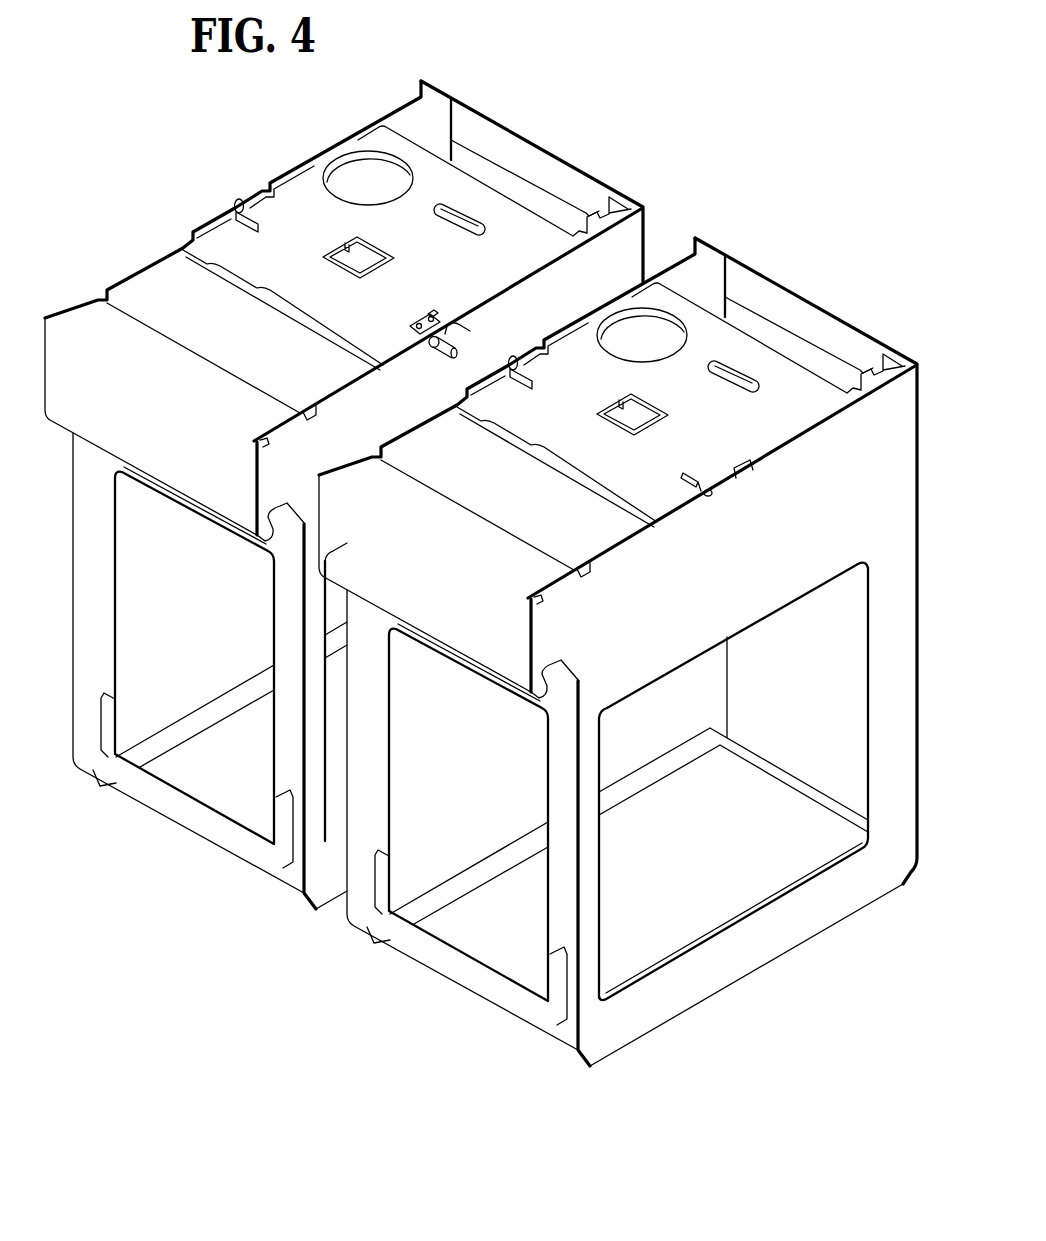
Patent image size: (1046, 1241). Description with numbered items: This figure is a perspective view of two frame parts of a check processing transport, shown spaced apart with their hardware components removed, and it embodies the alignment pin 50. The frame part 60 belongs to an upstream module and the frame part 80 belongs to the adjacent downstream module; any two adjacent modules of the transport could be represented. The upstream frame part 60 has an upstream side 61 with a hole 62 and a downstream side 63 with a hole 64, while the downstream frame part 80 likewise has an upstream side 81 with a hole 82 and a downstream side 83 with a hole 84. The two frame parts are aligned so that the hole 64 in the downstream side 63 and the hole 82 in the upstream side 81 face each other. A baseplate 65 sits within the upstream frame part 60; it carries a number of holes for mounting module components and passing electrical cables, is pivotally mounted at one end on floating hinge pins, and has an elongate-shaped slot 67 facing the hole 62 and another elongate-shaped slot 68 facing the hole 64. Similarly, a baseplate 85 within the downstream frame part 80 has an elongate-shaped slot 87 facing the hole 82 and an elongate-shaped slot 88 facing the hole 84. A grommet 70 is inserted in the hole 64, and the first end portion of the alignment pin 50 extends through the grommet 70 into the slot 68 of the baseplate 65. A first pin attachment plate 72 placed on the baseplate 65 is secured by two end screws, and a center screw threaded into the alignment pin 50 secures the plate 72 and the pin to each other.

The alignment pin 50 is at (457, 354).
The frame part 60 is at (351, 495).
The upstream side 61 is at (313, 157).
The hole 62 is at (233, 210).
The downstream side 63 is at (557, 250).
The hole 64 is at (443, 324).
The baseplate 65 is at (437, 143).
The elongate-shaped slot 67 is at (250, 232).
The elongate-shaped slot 68 is at (413, 321).
The grommet 70 is at (433, 340).
The first pin attachment plate 72 is at (425, 313).
The frame part 80 is at (618, 643).
The upstream side 81 is at (507, 356).
The hole 82 is at (526, 335).
The downstream side 83 is at (754, 371).
The hole 84 is at (739, 513).
The baseplate 85 is at (768, 325).
The elongate-shaped slot 87 is at (554, 387).
The elongate-shaped slot 88 is at (706, 458).